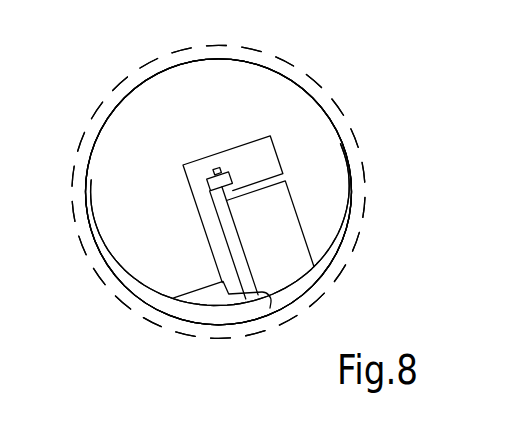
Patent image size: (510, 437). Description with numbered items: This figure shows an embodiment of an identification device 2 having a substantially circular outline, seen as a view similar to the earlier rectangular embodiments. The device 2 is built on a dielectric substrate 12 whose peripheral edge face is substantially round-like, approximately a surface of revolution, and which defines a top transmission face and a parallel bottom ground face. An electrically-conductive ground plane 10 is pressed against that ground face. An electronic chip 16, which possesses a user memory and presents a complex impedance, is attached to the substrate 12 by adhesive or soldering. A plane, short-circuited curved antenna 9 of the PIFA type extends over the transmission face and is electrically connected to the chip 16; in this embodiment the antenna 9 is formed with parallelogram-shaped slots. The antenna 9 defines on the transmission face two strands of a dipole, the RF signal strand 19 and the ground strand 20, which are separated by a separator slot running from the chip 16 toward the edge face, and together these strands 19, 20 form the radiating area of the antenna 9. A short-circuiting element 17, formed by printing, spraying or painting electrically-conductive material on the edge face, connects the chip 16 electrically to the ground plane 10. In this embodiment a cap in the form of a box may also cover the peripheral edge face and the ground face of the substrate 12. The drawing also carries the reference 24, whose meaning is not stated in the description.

The identification device 2 is at (108, 62).
The curved antenna 9 is at (142, 263).
The ground plane 10 is at (305, 297).
The dielectric substrate 12 is at (216, 317).
The electronic chip 16 is at (218, 168).
The short-circuiting element 17 is at (334, 252).
The RF signal strand 19 is at (107, 182).
The ground strand 20 is at (271, 300).
The outer boundary 24 is at (344, 111).